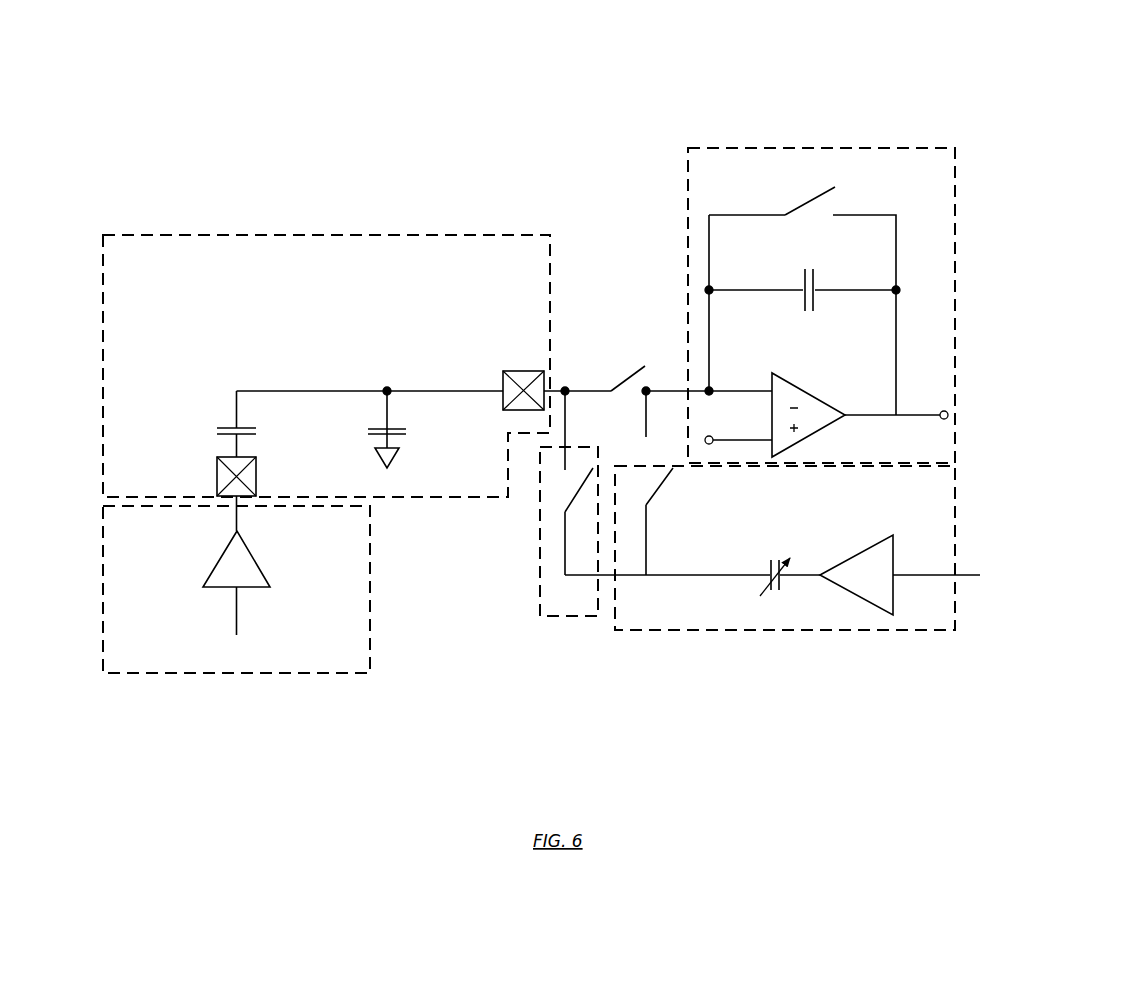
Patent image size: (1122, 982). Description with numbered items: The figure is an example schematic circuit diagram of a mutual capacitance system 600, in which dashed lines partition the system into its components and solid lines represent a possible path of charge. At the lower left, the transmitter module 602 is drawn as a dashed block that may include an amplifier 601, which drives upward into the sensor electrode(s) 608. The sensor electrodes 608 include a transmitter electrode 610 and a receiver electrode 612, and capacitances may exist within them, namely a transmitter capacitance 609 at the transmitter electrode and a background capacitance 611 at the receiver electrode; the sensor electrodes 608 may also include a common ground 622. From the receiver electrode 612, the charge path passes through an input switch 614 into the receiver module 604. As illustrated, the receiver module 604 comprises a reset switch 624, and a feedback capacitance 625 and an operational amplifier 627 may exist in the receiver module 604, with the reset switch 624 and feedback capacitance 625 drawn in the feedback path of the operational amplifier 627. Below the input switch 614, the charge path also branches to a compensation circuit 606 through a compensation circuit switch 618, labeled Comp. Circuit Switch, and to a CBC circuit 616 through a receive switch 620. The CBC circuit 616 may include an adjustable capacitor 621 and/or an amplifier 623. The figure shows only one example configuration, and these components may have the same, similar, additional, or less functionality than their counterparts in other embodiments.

The mutual capacitance system 600 is at (838, 110).
The amplifier 601 is at (213, 555).
The transmitter module 602 is at (236, 662).
The receiver module 604 is at (730, 148).
The compensation circuit 606 is at (581, 589).
The sensor electrode(s) 608 is at (326, 366).
The capacitance C_t 609 is at (226, 427).
The transmitter electrode 610 is at (232, 446).
The capacitance C_b 611 is at (399, 437).
The receiver electrode 612 is at (460, 387).
The input switch 614 is at (630, 368).
The CBC circuit 616 is at (778, 582).
The compensation circuit switch 618 is at (553, 528).
The receive switch 620 is at (676, 482).
The adjustable capacitor 621 is at (763, 597).
The common ground 622 is at (378, 453).
The amplifier 623 is at (843, 603).
The reset switch 624 is at (820, 201).
The capacitance C_3 625 is at (806, 318).
The operational amplifier 627 is at (822, 435).